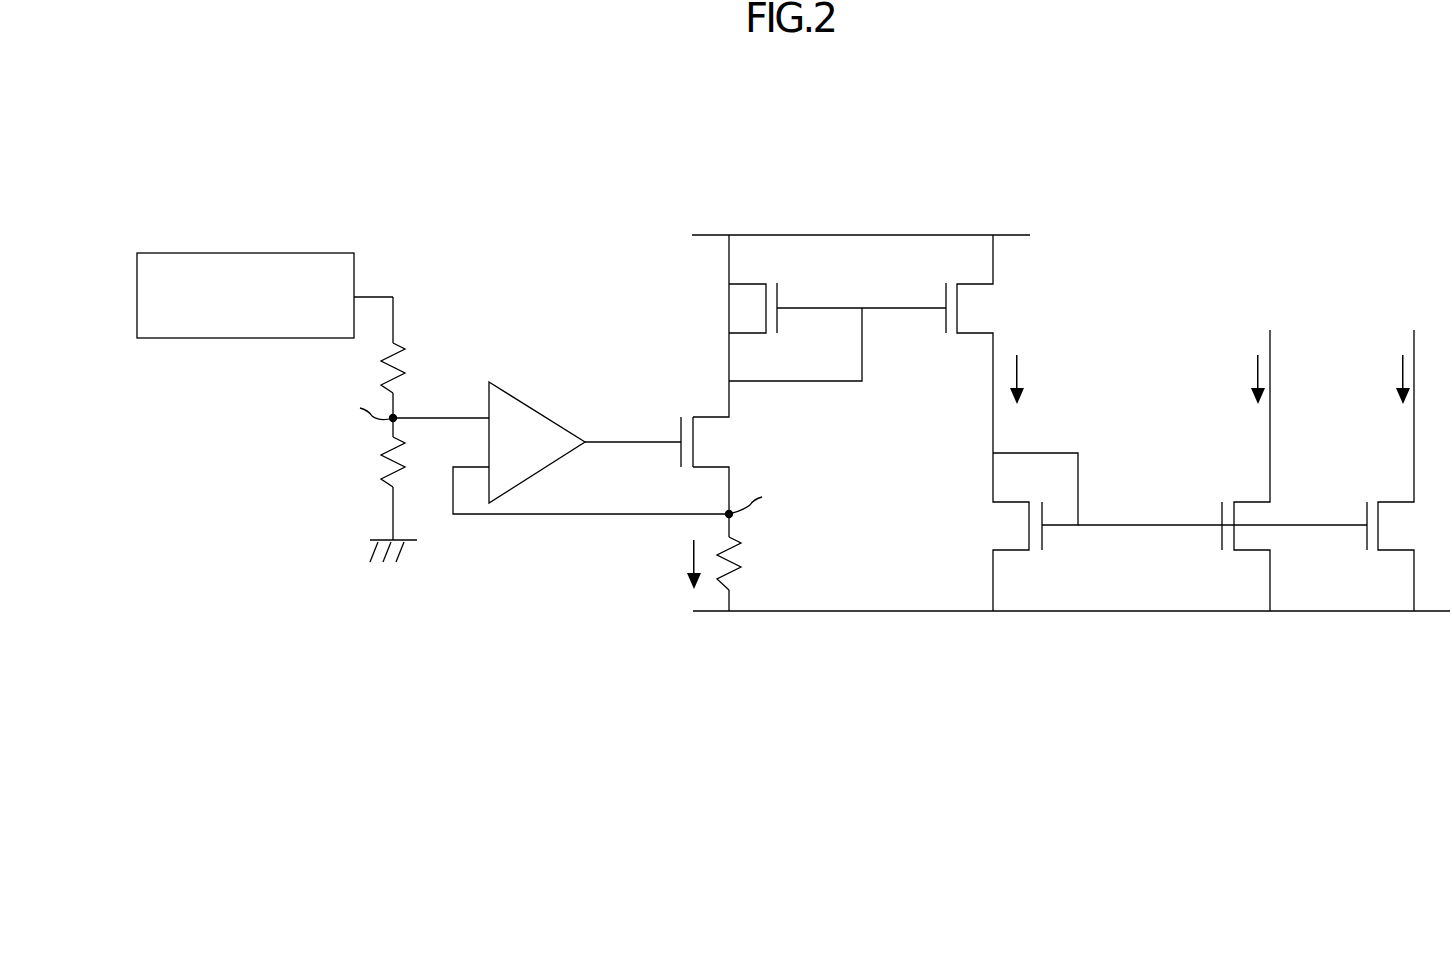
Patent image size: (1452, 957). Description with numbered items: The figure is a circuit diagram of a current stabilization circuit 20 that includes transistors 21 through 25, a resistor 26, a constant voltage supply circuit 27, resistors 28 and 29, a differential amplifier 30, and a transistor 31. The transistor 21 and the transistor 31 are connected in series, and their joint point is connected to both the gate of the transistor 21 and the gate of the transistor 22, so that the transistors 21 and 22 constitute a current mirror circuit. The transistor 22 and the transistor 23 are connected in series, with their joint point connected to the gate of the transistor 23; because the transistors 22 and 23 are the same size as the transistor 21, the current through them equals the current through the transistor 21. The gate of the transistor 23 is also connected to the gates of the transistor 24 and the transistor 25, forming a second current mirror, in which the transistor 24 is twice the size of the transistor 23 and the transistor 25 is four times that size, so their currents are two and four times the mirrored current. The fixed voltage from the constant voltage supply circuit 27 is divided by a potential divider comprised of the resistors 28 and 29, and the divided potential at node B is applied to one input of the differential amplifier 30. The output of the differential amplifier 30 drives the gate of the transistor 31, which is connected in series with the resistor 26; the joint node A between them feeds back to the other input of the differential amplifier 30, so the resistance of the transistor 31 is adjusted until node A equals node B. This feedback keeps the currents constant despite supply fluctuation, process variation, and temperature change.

The current stabilization circuit 20 is at (767, 137).
The transistor 21 is at (790, 277).
The transistor 22 is at (944, 344).
The transistor 23 is at (1040, 560).
The transistor 24 is at (1224, 554).
The transistor 25 is at (1368, 554).
The resistor 26 is at (759, 568).
The constant voltage supply circuit 27 is at (285, 254).
The resistor 28 is at (425, 332).
The resistor 29 is at (414, 504).
The differential amplifier 30 is at (522, 397).
The transistor 31 is at (686, 406).